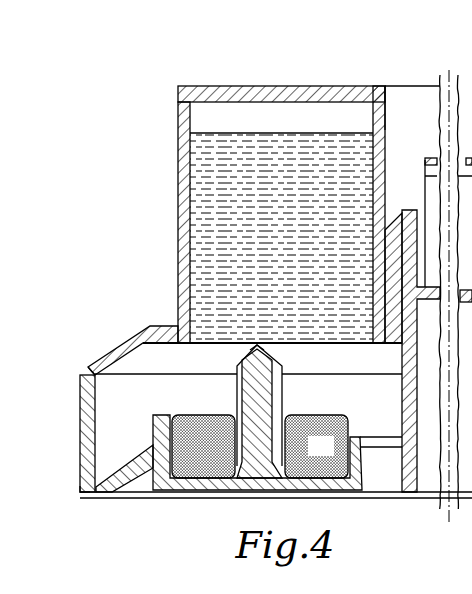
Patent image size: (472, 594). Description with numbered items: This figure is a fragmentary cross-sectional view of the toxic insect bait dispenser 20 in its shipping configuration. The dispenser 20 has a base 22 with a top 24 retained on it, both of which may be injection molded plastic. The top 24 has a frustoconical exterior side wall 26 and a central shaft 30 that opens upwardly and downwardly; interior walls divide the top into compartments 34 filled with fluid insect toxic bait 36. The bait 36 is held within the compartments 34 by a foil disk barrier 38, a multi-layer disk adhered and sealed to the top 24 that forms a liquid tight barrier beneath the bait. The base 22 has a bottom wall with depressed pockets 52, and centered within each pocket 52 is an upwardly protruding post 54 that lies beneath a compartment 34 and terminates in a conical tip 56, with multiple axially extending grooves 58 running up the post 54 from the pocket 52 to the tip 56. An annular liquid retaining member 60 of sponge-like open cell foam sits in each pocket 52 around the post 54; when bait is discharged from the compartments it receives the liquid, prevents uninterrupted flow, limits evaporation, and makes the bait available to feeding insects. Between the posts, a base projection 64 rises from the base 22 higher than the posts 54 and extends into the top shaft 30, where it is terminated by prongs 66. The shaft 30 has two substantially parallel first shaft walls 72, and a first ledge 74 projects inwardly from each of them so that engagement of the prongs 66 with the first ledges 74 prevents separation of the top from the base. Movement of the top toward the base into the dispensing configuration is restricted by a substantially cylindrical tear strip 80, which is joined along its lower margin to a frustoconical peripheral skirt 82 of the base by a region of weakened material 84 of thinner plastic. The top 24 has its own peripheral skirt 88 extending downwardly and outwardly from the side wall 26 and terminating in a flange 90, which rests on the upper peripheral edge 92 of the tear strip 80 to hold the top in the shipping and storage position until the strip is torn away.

The toxic insect bait dispenser 20 is at (138, 70).
The base 22 is at (130, 498).
The top 24 is at (177, 200).
The exterior side wall 26 is at (177, 280).
The central shaft 30 is at (392, 86).
The compartments 34 is at (283, 100).
The insect toxic bait 36 is at (313, 133).
The foil disk barrier 38 is at (338, 346).
The depressed pockets 52 is at (322, 416).
The post 54 is at (250, 392).
The conical tip 56 is at (246, 352).
The axially extending grooves 58 is at (282, 398).
The annular liquid retaining member 60 is at (260, 446).
The base projection 64 is at (438, 505).
The prongs 66 is at (402, 213).
The first shaft walls 72 is at (388, 98).
The first ledge 74 is at (394, 240).
The tear strip 80 is at (82, 430).
The peripheral skirt 82 is at (126, 464).
The region of weakened material 84 is at (88, 498).
The peripheral skirt 88 is at (136, 340).
The flange 90 is at (94, 366).
The upper peripheral edge 92 is at (86, 372).